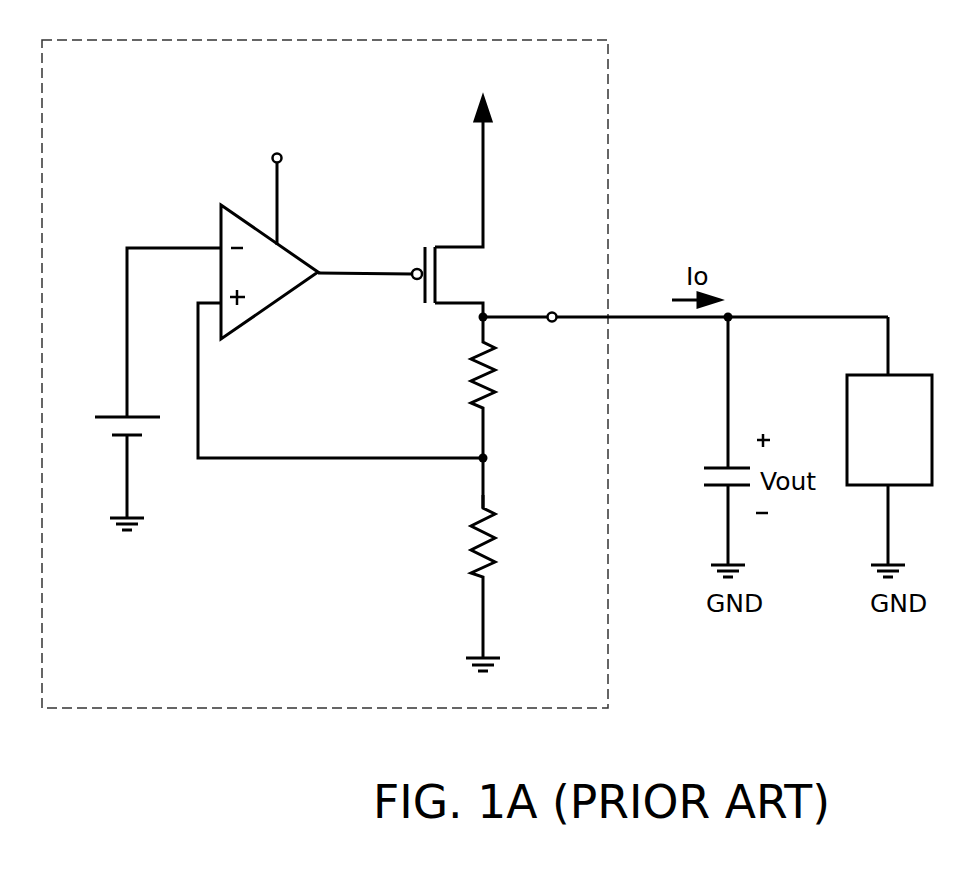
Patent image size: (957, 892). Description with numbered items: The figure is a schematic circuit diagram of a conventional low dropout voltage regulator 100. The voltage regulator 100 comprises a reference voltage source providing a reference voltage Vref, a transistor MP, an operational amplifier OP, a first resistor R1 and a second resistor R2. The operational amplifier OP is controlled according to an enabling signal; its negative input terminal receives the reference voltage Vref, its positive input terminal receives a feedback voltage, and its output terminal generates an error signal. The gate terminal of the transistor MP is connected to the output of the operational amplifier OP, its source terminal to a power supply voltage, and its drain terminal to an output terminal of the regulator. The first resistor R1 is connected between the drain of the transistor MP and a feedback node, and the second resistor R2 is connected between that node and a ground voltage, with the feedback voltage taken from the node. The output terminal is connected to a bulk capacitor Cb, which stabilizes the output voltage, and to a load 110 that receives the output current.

The voltage regulator 100 is at (108, 84).
The load 110 is at (858, 374).
The operational amplifier OP is at (269, 247).
The transistor MP is at (454, 276).
The first resistor R1 is at (462, 368).
The second resistor R2 is at (459, 542).
The bulk capacitor Cb is at (704, 441).
The reference voltage Vref is at (111, 403).